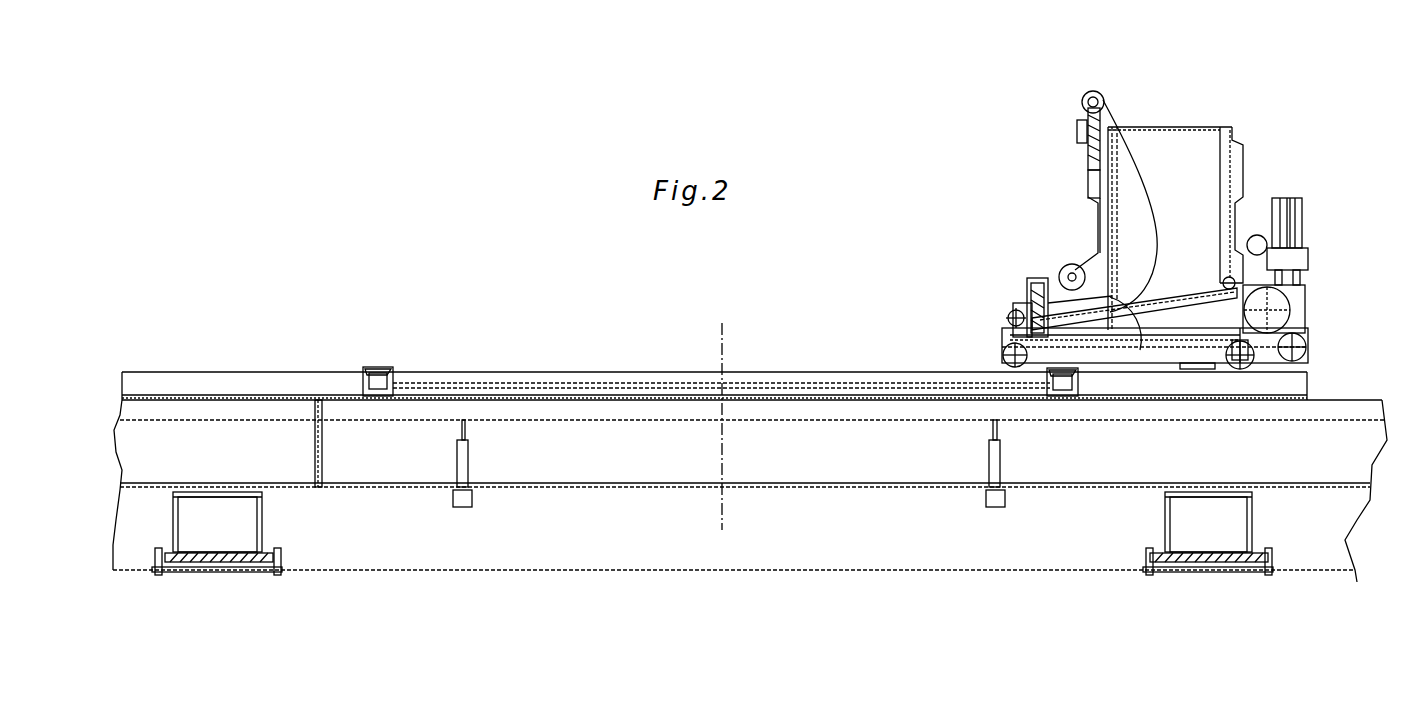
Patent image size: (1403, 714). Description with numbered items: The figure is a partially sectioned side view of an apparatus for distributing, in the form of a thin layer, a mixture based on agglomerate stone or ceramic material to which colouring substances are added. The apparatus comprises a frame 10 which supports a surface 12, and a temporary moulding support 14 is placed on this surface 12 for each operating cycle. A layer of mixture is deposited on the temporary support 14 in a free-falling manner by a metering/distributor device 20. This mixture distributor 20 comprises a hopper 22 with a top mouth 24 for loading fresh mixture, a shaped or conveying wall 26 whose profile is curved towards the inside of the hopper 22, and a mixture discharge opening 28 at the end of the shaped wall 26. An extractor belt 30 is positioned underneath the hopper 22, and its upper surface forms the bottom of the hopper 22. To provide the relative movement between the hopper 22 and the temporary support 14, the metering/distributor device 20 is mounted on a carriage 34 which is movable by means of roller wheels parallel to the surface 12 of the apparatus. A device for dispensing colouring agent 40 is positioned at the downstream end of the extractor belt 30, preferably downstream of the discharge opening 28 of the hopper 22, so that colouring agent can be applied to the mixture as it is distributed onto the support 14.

The frame 10 is at (1032, 465).
The surface 12 is at (815, 404).
The temporary moulding support 14 is at (803, 372).
The metering/distributor device 20 is at (1253, 146).
The hopper 22 is at (1232, 130).
The top mouth 24 is at (1153, 127).
The shaped or conveying wall 26 is at (1087, 163).
The mixture discharge opening 28 is at (1140, 318).
The extractor belt 30 is at (1180, 308).
The carriage 34 is at (1200, 353).
The device for dispensing colouring agent 40 is at (1036, 282).